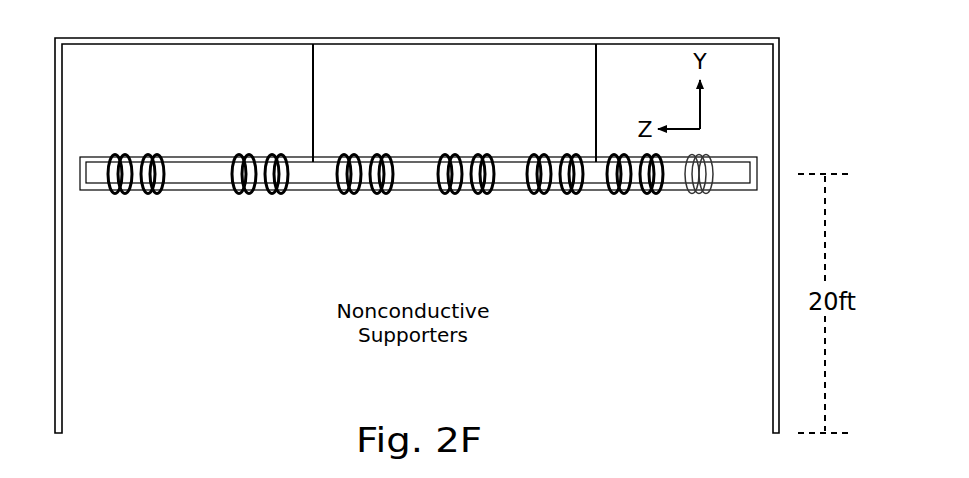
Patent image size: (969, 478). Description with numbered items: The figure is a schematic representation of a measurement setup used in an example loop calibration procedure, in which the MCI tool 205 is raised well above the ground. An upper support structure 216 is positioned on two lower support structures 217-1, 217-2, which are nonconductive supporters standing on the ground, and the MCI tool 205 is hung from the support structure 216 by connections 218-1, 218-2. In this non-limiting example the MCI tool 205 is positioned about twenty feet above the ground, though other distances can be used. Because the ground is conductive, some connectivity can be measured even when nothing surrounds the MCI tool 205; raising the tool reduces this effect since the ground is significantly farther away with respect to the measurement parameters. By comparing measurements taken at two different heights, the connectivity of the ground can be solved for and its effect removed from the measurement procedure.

The support structure 216 is at (197, 37).
The MCI tool 205 is at (172, 153).
The support structure 217-1 is at (325, 317).
The support structure 217-2 is at (495, 315).
The connection 218-1 is at (313, 87).
The connection 218-2 is at (596, 87).